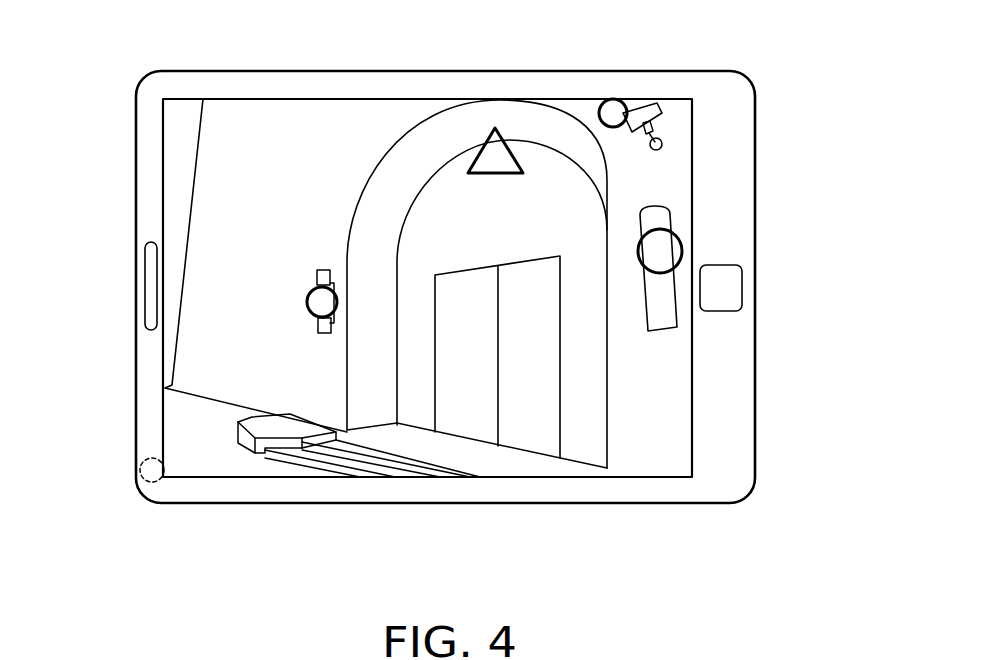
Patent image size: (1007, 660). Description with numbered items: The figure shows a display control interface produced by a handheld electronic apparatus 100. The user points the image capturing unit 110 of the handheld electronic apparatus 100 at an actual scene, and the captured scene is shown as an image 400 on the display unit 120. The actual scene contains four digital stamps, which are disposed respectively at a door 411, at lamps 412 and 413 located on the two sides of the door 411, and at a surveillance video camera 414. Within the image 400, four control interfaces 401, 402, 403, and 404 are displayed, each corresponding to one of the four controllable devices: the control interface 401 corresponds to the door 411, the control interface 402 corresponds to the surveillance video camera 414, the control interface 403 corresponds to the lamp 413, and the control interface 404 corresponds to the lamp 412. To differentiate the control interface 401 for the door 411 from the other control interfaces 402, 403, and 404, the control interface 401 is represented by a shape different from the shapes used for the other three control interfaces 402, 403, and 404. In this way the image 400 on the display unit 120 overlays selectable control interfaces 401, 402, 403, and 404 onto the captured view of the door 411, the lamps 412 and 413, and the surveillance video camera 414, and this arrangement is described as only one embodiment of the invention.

The handheld electronic apparatus 100 is at (757, 111).
The image capturing unit 110 is at (143, 458).
The display unit 120 is at (563, 478).
The image 400 is at (245, 138).
The control interface 401 is at (502, 128).
The control interface 402 is at (610, 115).
The control interface 403 is at (670, 251).
The control interface 404 is at (325, 308).
The door 411 is at (447, 170).
The lamp 412 is at (326, 272).
The lamp 413 is at (660, 215).
The surveillance video camera 414 is at (647, 101).